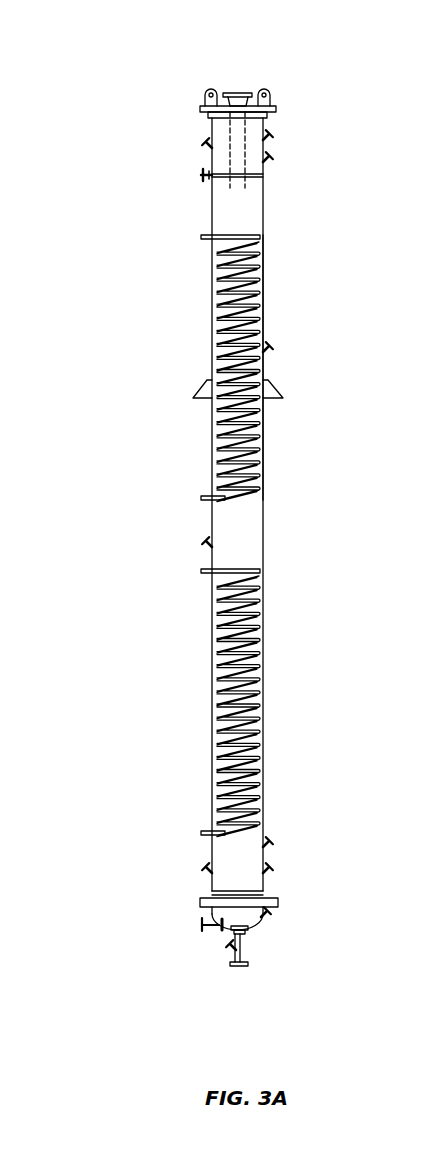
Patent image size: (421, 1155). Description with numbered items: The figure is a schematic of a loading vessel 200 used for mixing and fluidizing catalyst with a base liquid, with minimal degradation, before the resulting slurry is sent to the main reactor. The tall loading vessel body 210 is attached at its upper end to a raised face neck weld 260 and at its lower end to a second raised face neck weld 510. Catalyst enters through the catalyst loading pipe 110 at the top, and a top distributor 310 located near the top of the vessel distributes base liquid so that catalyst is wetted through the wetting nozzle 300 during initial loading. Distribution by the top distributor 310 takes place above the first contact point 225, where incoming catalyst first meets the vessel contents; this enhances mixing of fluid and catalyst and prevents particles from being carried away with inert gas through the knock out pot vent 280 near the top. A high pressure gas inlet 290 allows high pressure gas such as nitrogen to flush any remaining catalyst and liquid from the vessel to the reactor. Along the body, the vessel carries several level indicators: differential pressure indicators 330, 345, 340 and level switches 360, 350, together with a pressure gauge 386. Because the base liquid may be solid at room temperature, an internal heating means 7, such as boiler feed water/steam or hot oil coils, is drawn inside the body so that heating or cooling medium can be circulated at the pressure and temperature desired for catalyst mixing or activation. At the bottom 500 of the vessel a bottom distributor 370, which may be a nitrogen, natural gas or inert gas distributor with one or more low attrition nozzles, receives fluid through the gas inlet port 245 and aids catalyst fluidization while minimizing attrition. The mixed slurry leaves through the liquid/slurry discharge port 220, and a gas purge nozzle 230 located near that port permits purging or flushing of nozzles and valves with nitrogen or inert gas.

The loading vessel 200 is at (150, 55).
The catalyst loading pipe 110 is at (240, 92).
The raised face neck weld 260 is at (276, 108).
The differential pressure indicator 330 is at (203, 141).
The knock out pot vent 280 is at (272, 133).
The high pressure gas inlet 290 is at (272, 156).
The wetting nozzle 300 is at (201, 175).
The top distributor 310 is at (250, 178).
The first contact point 225 is at (232, 188).
The loading vessel body 210 is at (265, 278).
The heating means 7 is at (217, 277).
The level switch 360 is at (272, 349).
The differential pressure indicator 345 is at (204, 542).
The differential pressure indicator 340 is at (205, 867).
The pressure gauge 386 is at (272, 871).
The gas inlet port 245 is at (208, 903).
The raised face neck weld 510 is at (278, 903).
The bottom 500 is at (118, 862).
The level switch 350 is at (271, 913).
The bottom distributor 370 is at (250, 929).
The gas purge nozzle 230 is at (224, 944).
The liquid/slurry discharge port 220 is at (247, 965).